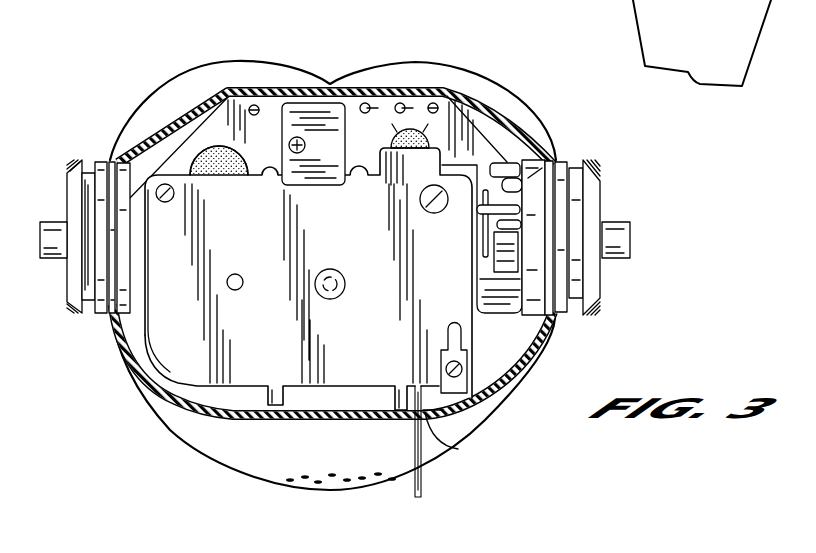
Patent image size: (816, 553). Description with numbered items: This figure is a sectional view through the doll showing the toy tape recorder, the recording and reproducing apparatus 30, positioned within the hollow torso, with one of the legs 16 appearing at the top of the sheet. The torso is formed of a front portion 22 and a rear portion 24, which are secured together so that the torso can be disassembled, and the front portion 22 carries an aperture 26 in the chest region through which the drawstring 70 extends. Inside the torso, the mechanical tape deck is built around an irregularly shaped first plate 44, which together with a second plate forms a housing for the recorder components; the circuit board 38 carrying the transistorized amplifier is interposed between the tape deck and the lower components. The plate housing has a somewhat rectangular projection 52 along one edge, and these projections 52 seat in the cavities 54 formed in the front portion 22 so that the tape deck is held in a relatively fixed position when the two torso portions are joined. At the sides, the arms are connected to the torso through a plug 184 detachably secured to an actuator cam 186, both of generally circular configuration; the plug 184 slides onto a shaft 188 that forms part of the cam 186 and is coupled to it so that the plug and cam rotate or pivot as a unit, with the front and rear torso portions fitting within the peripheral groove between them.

The legs 16 is at (747, 33).
The front portion 22 is at (476, 416).
The rear portion 24 is at (413, 73).
The aperture 26 is at (458, 449).
The recording and reproducing apparatus 30 is at (160, 145).
The circuit board 38 is at (468, 138).
The first plate 44 is at (362, 245).
The rectangular projection 52 is at (355, 391).
The cavities 54 is at (211, 281).
The drawstring 70 is at (422, 486).
The plug 184 is at (601, 178).
The actuator cam 186 is at (553, 155).
The shaft 188 is at (628, 240).